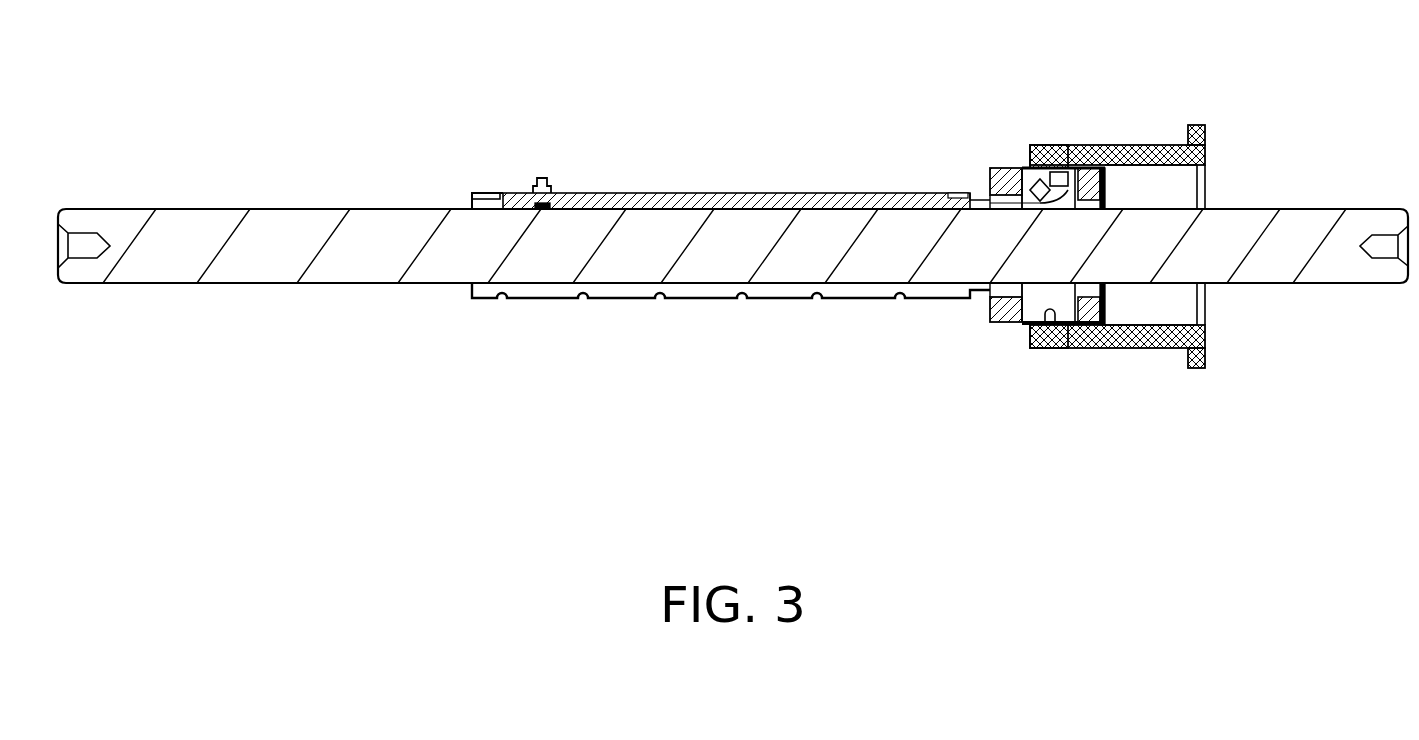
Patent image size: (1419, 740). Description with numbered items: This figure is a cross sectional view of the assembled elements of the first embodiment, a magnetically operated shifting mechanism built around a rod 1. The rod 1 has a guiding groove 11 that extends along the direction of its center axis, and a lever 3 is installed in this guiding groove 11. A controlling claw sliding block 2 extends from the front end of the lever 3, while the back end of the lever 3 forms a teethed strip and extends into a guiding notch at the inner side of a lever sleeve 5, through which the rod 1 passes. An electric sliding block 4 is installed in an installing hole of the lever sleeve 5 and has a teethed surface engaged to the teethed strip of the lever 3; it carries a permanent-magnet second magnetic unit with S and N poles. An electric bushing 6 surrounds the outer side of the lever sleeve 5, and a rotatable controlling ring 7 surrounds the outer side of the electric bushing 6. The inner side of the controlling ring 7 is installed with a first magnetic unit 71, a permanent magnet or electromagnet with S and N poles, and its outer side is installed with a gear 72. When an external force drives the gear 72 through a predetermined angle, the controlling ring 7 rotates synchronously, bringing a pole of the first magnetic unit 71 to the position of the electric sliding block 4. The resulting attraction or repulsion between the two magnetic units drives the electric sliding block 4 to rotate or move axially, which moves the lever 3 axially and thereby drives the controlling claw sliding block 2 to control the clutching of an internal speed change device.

The rod 1 is at (388, 207).
The guiding groove 11 is at (487, 203).
The controlling claw sliding block 2 is at (538, 175).
The lever 3 is at (660, 193).
The electric sliding block 4 is at (1030, 165).
The lever sleeve 5 is at (988, 322).
The electric bushing 6 is at (1022, 325).
The controlling ring 7 is at (1098, 142).
The first magnetic unit 71 is at (1057, 150).
The gear 72 is at (1205, 125).